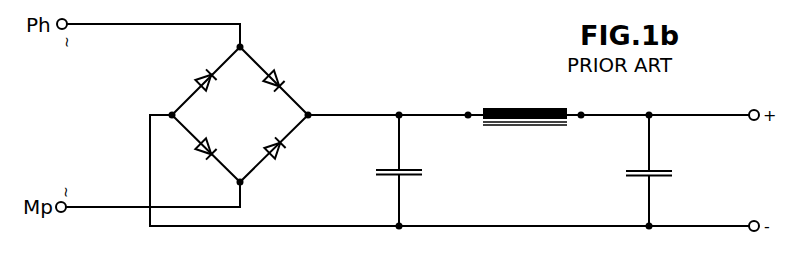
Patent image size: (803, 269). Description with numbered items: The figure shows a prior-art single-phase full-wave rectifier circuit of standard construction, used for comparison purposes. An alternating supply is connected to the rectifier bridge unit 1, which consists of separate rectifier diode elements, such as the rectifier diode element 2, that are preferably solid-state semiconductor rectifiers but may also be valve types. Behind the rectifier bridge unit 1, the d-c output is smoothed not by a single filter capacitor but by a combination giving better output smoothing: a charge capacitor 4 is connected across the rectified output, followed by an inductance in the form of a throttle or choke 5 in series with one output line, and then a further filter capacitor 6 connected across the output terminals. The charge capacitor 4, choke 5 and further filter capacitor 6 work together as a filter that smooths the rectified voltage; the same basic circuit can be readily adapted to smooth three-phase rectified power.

The rectifier bridge unit 1 is at (293, 72).
The rectifier diode element 2 is at (280, 142).
The charge capacitor 4 is at (406, 168).
The throttle or choke 5 is at (535, 108).
The further filter capacitor 6 is at (659, 170).